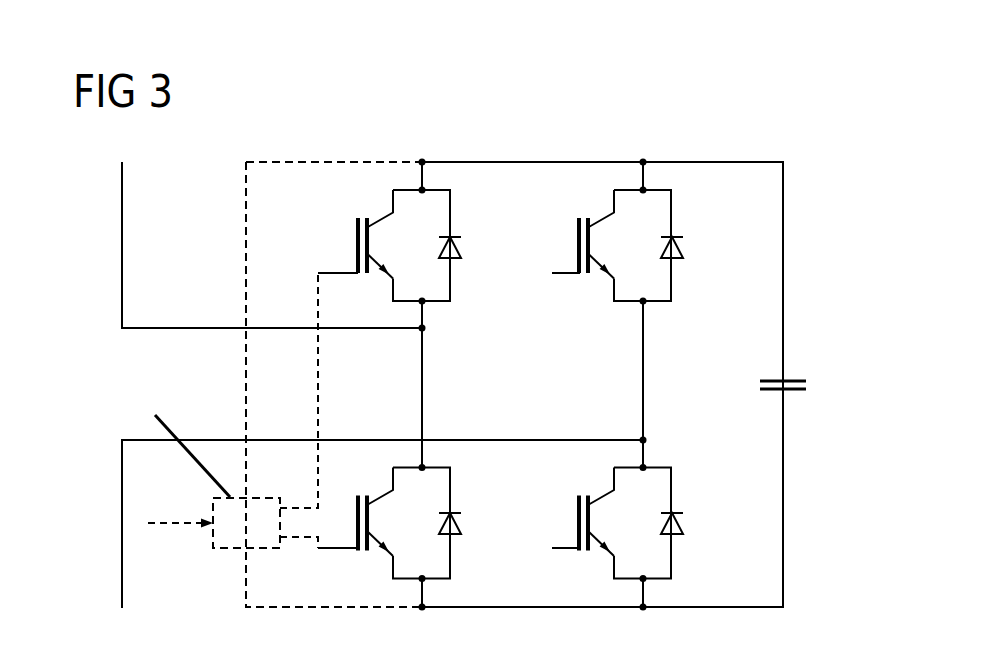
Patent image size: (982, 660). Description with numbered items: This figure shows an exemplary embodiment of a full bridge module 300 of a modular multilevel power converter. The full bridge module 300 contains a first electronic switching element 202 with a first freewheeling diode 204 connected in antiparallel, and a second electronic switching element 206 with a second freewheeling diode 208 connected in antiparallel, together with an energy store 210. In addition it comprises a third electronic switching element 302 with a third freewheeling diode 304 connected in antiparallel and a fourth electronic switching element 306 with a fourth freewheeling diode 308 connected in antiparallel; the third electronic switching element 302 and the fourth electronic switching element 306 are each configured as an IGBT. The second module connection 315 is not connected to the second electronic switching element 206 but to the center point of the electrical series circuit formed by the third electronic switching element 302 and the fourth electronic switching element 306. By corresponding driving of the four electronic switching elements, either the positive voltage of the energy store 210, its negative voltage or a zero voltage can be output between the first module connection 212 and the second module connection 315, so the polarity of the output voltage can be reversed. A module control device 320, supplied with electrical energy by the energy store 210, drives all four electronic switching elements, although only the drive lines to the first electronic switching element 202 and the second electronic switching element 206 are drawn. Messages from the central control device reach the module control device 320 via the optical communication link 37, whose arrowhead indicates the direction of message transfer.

The full bridge module 300 is at (787, 141).
The first electronic switching element 202 is at (357, 226).
The first freewheeling diode 204 is at (463, 247).
The second electronic switching element 206 is at (357, 533).
The second freewheeling diode 208 is at (463, 523).
The third electronic switching element 302 is at (579, 226).
The third freewheeling diode 304 is at (685, 247).
The fourth electronic switching element 306 is at (579, 503).
The fourth freewheeling diode 308 is at (685, 523).
The energy store 210 is at (811, 383).
The first module connection 212 is at (121, 249).
The second module connection 315 is at (121, 527).
The module control device 320 is at (230, 550).
The optical communication link 37 is at (172, 522).